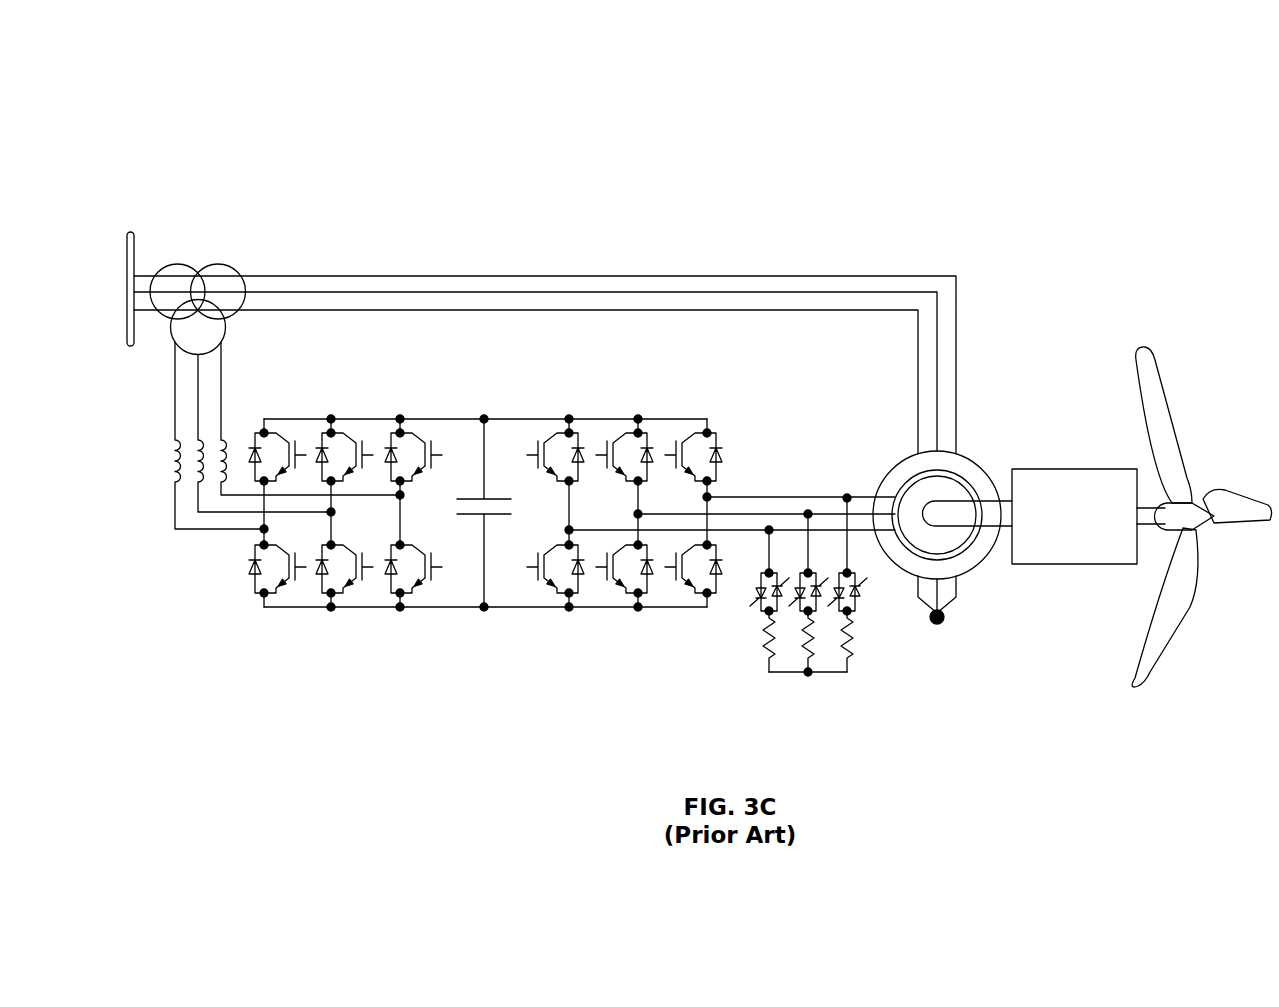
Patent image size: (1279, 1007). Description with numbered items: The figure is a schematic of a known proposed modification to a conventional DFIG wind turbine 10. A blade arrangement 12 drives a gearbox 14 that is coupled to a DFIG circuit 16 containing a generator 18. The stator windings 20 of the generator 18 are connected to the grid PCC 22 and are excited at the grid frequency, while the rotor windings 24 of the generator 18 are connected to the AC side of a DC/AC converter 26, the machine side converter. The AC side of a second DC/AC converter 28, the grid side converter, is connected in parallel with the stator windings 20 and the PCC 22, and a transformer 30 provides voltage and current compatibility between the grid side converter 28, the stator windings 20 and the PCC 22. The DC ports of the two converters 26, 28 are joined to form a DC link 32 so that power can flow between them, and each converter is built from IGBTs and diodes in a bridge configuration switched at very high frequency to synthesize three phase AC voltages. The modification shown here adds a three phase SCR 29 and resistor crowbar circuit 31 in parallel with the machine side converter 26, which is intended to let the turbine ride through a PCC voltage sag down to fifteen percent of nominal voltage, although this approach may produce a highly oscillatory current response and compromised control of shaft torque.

The DFIG wind turbine 10 is at (193, 92).
The blade arrangement 12 is at (1218, 476).
The gearbox 14 is at (1073, 469).
The DFIG circuit 16 is at (448, 534).
The generator 18 is at (972, 455).
The stator windings 20 is at (957, 330).
The grid PCC 22 is at (128, 235).
The rotor windings 24 is at (793, 488).
The DC/AC converter (machine side converter) 26 is at (611, 613).
The second DC/AC converter (grid side converter) 28 is at (352, 613).
The three phase SCR 29 is at (809, 585).
The transformer 30 is at (160, 340).
The resistor crowbar circuit 31 is at (753, 641).
The DC link 32 is at (440, 419).